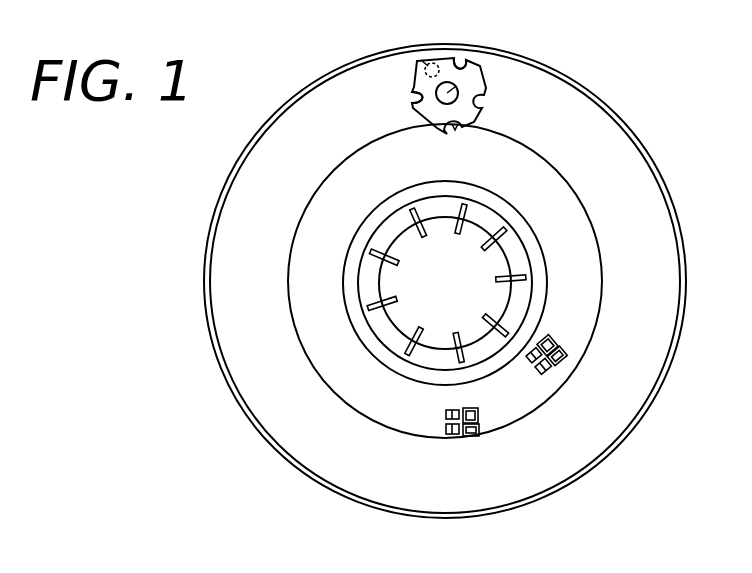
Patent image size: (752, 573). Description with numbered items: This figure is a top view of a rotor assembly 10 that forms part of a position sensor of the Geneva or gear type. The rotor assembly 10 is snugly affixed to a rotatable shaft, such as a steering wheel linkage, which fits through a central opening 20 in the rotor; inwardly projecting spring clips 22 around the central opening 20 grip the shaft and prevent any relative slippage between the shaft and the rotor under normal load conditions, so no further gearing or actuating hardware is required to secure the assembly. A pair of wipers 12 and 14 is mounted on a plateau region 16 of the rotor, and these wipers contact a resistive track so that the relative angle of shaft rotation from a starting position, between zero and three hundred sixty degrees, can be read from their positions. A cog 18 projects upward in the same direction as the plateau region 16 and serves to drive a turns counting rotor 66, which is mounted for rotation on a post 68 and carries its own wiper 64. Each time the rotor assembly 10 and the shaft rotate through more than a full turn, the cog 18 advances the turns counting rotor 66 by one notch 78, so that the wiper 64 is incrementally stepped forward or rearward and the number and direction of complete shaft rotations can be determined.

The rotor assembly 10 is at (292, 80).
The wiper 12 is at (483, 428).
The wiper 14 is at (563, 353).
The plateau region 16 is at (563, 225).
The cog 18 is at (462, 124).
The central opening 20 is at (468, 293).
The spring clips 22 is at (374, 307).
The wiper 64 is at (422, 62).
The turns counting rotor 66 is at (458, 62).
The post 68 is at (458, 90).
The notch 78 is at (412, 97).